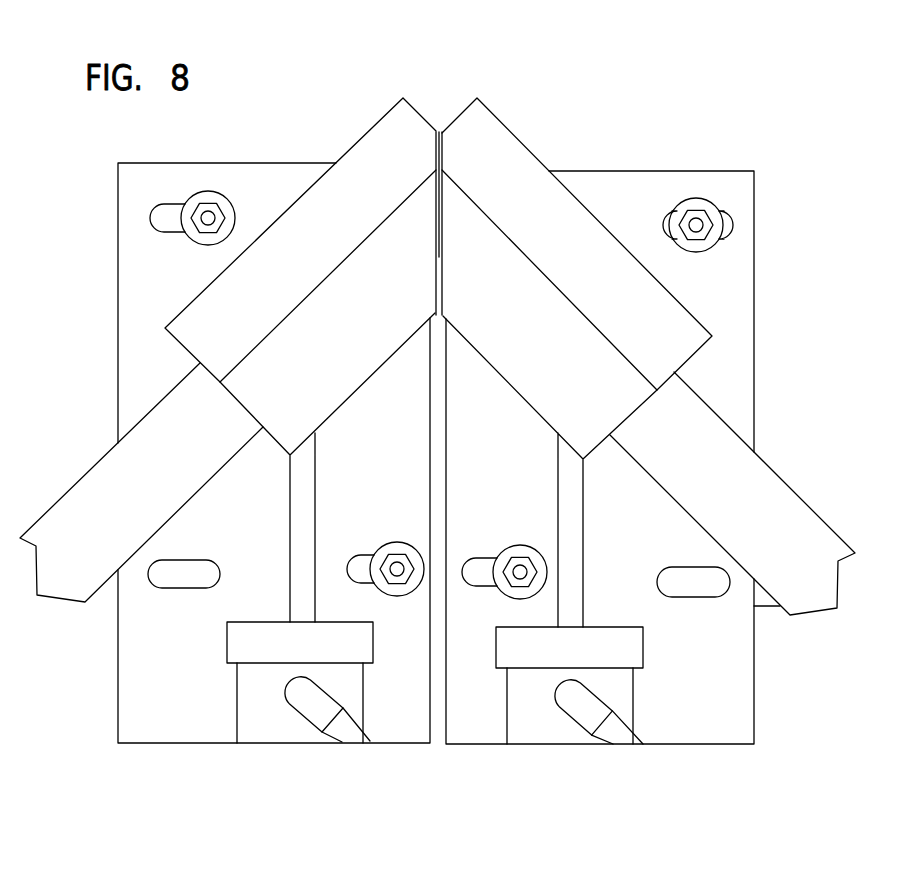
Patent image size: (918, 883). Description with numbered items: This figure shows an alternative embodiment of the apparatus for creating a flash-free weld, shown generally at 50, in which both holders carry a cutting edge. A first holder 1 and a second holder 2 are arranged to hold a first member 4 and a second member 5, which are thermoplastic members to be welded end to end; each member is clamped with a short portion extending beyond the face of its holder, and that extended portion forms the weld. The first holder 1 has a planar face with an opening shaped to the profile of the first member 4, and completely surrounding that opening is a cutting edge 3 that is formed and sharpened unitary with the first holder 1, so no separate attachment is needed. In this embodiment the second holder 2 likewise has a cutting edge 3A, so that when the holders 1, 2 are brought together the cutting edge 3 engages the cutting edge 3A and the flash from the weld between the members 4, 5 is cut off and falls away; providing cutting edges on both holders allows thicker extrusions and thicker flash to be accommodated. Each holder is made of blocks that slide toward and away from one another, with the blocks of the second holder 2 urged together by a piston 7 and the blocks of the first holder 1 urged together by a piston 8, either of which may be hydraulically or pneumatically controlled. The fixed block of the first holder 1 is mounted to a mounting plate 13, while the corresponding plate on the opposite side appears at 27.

The apparatus for creating a flash-free weld 50 is at (684, 100).
The first holder 1 is at (508, 166).
The second holder 2 is at (373, 168).
The cutting edge 3 is at (443, 128).
The cutting edge 3A is at (440, 128).
The first member 4 is at (757, 500).
The second member 5 is at (90, 513).
The piston 7 is at (272, 718).
The piston 8 is at (552, 727).
The mounting plate 13 is at (738, 188).
The left base plate 27 is at (142, 262).